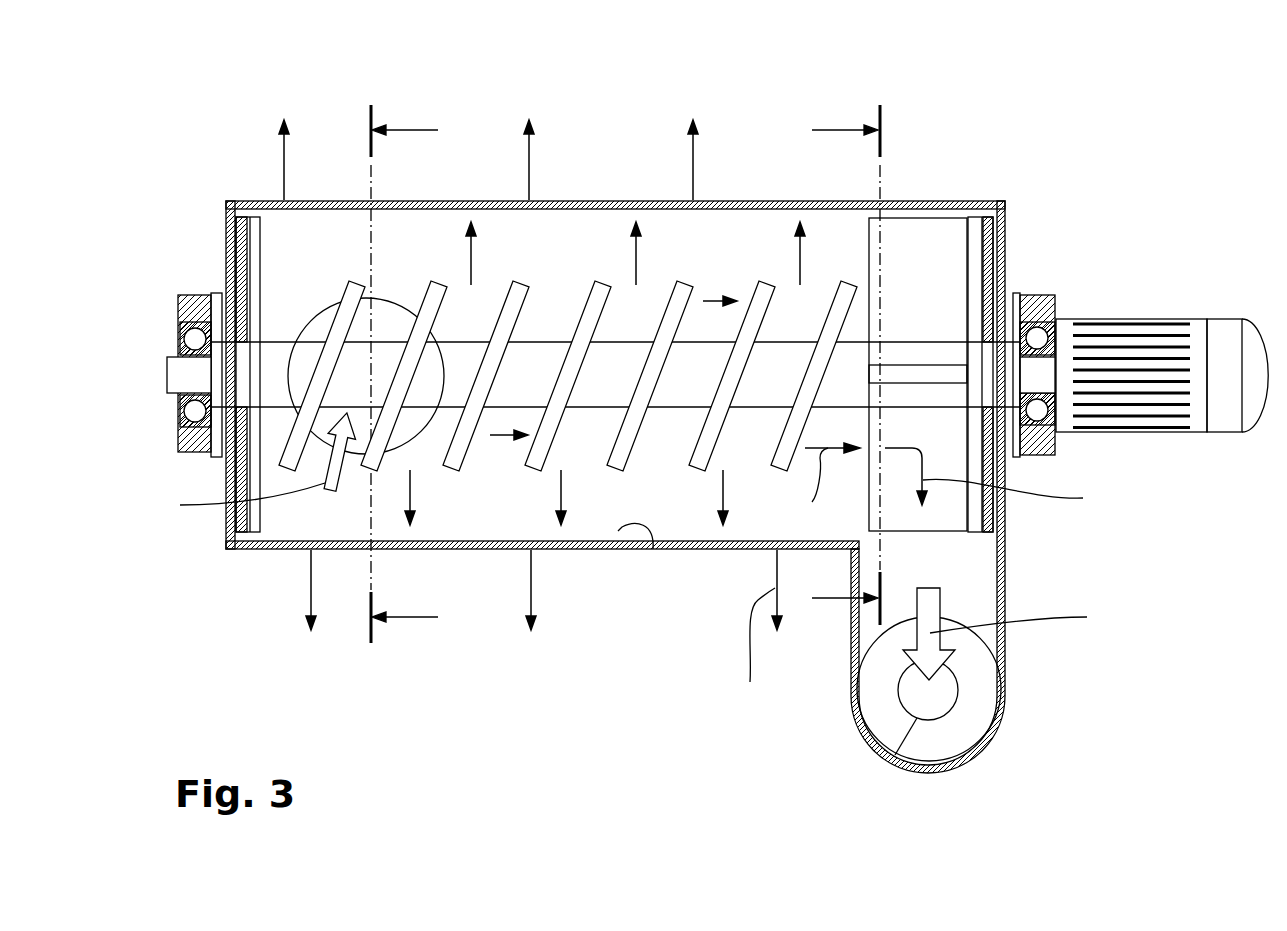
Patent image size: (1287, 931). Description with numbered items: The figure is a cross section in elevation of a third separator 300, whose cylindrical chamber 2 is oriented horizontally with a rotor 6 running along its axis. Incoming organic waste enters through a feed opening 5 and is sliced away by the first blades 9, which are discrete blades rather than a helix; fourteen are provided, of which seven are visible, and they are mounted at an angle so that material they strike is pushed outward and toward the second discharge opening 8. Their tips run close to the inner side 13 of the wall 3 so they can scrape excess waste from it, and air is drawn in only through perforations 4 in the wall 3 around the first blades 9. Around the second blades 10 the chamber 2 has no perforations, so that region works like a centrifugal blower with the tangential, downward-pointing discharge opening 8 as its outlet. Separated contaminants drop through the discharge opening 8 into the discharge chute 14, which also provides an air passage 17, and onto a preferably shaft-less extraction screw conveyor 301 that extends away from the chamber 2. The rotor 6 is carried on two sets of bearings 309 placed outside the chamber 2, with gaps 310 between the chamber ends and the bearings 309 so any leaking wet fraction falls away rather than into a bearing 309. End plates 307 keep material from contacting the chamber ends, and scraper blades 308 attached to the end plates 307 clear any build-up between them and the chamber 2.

The cylindrical chamber 2 is at (746, 237).
The wall 3 is at (582, 550).
The perforations 4 is at (477, 200).
The feed opening 5 is at (413, 425).
The rotor 6 is at (698, 387).
The second discharge opening 8 is at (987, 544).
The first blades 9 is at (603, 284).
The second blades 10 is at (918, 262).
The inner side 13 is at (650, 549).
The discharge chute 14 is at (1011, 487).
The air passage 17 is at (962, 572).
The third separator 300 is at (1088, 134).
The extraction screw conveyor 301 is at (963, 712).
The end plates 307 is at (248, 550).
The scraper blades 308 is at (243, 237).
The bearings 309 is at (178, 357).
The gaps 310 is at (1010, 293).